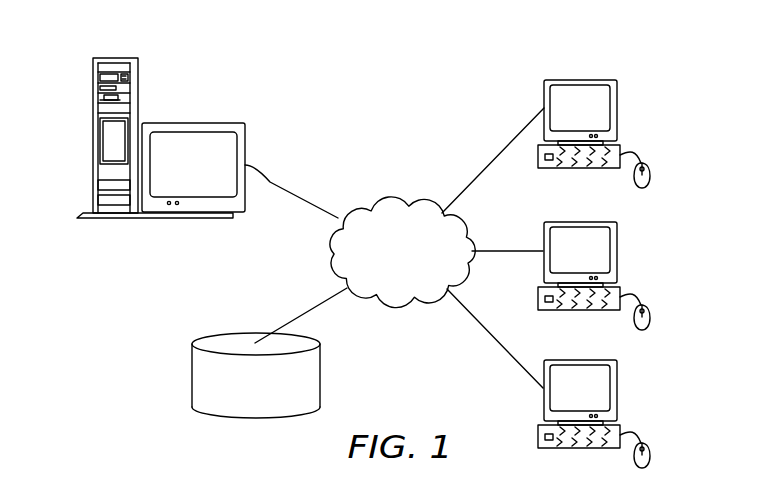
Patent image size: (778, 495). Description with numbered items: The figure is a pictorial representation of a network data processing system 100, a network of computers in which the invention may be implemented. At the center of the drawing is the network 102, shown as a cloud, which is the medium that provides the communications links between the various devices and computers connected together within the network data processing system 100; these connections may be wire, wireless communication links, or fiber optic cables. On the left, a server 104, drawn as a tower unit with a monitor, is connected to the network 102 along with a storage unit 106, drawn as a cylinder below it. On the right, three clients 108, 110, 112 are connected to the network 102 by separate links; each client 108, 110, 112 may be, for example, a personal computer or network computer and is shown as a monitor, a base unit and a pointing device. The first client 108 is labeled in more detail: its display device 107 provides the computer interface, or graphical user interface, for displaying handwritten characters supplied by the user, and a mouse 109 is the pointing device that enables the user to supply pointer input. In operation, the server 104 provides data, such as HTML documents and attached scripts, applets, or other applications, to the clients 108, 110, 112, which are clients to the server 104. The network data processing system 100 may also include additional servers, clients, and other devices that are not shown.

The network data processing system 100 is at (452, 88).
The network 102 is at (373, 205).
The server 104 is at (94, 140).
The storage unit 106 is at (192, 375).
The display device 107 is at (580, 90).
The client 108 is at (617, 110).
The mouse 109 is at (651, 170).
The client 110 is at (615, 252).
The client 112 is at (615, 390).